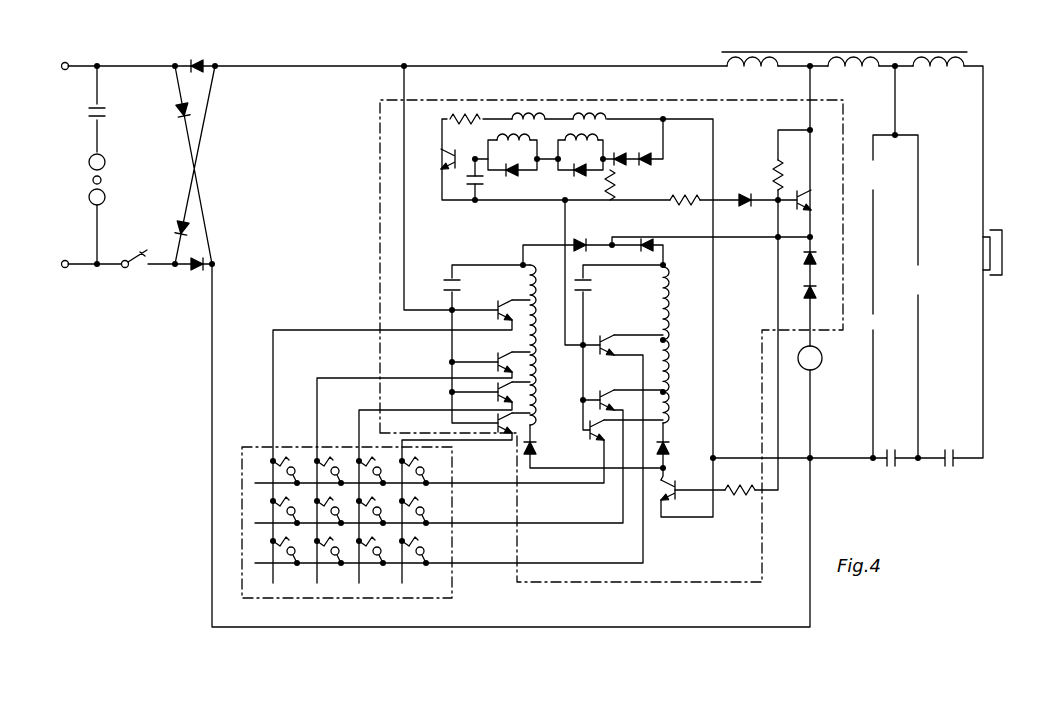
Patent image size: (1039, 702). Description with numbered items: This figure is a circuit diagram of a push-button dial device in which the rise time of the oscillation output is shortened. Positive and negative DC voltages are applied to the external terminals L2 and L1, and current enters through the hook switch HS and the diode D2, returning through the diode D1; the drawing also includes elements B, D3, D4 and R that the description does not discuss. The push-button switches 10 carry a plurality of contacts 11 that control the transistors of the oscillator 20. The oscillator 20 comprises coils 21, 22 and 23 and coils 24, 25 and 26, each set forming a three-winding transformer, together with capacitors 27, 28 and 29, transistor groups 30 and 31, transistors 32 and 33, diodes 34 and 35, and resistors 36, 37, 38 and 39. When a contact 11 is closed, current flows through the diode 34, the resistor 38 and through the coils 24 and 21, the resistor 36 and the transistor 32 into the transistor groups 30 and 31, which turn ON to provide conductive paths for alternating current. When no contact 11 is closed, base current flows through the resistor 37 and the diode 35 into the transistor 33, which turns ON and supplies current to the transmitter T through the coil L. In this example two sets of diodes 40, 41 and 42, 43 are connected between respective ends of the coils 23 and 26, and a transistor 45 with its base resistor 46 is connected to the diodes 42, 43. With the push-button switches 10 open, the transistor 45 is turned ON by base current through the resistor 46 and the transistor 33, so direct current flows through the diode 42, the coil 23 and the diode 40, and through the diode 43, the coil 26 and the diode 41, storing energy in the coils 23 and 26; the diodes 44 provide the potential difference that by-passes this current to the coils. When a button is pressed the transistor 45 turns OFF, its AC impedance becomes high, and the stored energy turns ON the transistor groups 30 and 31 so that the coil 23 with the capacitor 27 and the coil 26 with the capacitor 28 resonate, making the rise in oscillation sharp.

The push-button switches 10 is at (452, 510).
The contacts 11 is at (428, 465).
The oscillator 20 is at (380, 168).
The coil 21 is at (526, 107).
The coil 22 is at (499, 138).
The coil 23 is at (535, 254).
The coil 24 is at (588, 107).
The coil 25 is at (605, 142).
The coil 26 is at (675, 306).
The capacitor 27 is at (444, 285).
The capacitor 28 is at (592, 285).
The capacitor 29 is at (470, 190).
The transistor group 30 is at (523, 293).
The transistor group 31 is at (619, 318).
The transistor 32 is at (448, 160).
The transistor 33 is at (806, 203).
The diode 34 is at (662, 162).
The diode 35 is at (745, 193).
The resistor 36 is at (464, 110).
The resistor 37 is at (675, 208).
The resistor 38 is at (617, 182).
The resistor 39 is at (770, 158).
The diode 40 is at (582, 238).
The diode 41 is at (657, 251).
The diode 42 is at (540, 450).
The diode 43 is at (670, 454).
The diodes 44 is at (801, 280).
The transistor 45 is at (678, 505).
The base resistor 46 is at (736, 501).
The external terminal L1 is at (52, 66).
The external terminal L2 is at (52, 264).
The bell B is at (84, 180).
The hook switch HS is at (133, 245).
The diode D1 is at (196, 60).
The diode D2 is at (196, 272).
The diode D3 is at (176, 218).
The diode D4 is at (180, 116).
The coil L is at (866, 50).
The receiver R is at (981, 254).
The transmitter T is at (823, 358).